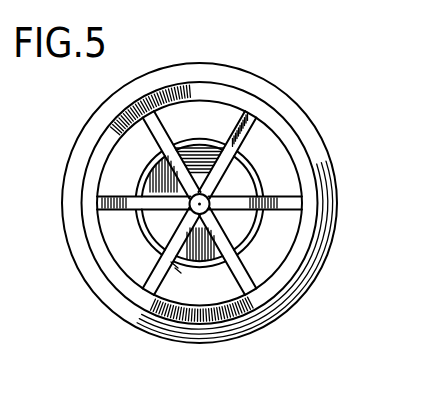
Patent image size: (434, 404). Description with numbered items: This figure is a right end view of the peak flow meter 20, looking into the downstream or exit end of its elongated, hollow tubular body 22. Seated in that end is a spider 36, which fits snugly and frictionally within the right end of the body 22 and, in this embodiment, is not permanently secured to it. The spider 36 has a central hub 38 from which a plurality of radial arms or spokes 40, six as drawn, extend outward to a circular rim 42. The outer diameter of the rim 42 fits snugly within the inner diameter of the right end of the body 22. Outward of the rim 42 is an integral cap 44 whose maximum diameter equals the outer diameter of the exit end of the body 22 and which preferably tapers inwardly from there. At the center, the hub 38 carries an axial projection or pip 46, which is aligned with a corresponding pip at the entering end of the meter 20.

The peak flow meter 20 is at (262, 76).
The elongated body 22 is at (190, 110).
The spider 36 is at (228, 283).
The central hub 38 is at (219, 192).
The radial arms or spokes 40 is at (298, 187).
The circular rim 42 is at (310, 220).
The cap 44 is at (129, 94).
The pip 46 is at (185, 282).